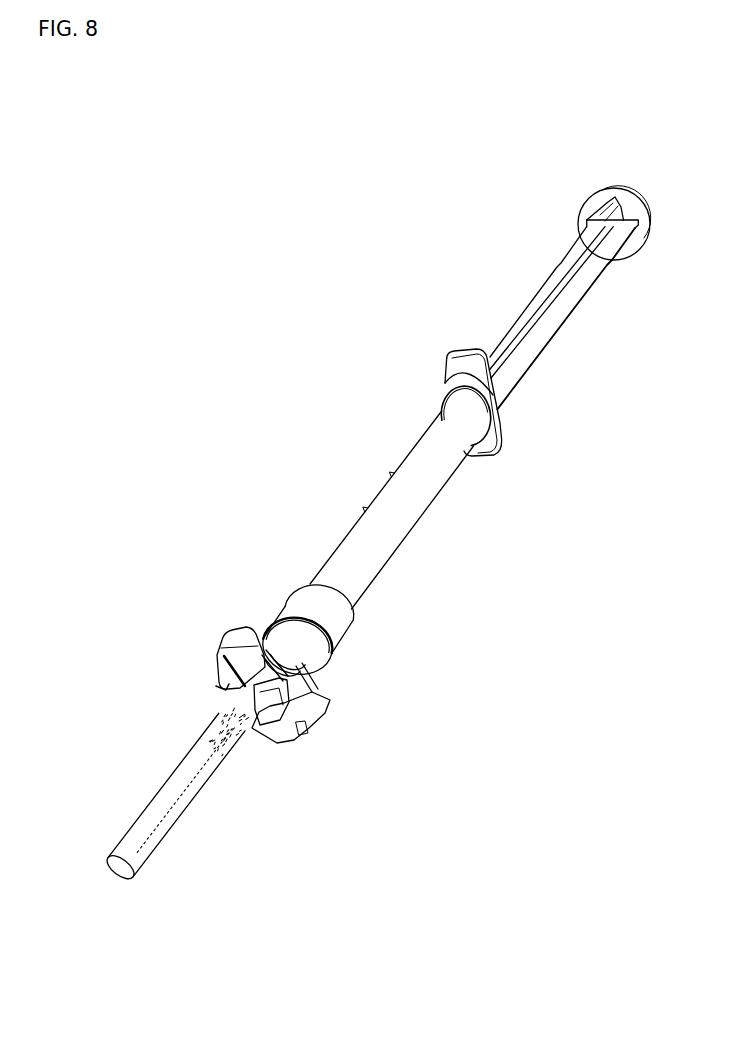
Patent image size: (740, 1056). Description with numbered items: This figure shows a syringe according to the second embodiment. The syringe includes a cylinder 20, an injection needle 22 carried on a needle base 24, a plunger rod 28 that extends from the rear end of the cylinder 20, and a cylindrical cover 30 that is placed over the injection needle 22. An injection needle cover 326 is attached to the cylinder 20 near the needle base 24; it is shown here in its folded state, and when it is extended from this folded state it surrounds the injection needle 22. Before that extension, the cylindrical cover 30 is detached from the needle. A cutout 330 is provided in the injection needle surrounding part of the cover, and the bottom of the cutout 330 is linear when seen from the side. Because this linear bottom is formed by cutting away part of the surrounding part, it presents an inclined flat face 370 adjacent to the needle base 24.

The cylinder 20 is at (337, 549).
The injection needle 22 is at (199, 785).
The needle base 24 is at (253, 741).
The plunger rod 28 is at (542, 343).
The cylindrical cover 30 is at (140, 862).
The injection needle cover 326 is at (227, 638).
The cutout 330 is at (252, 708).
The inclined flat face 370 is at (288, 709).